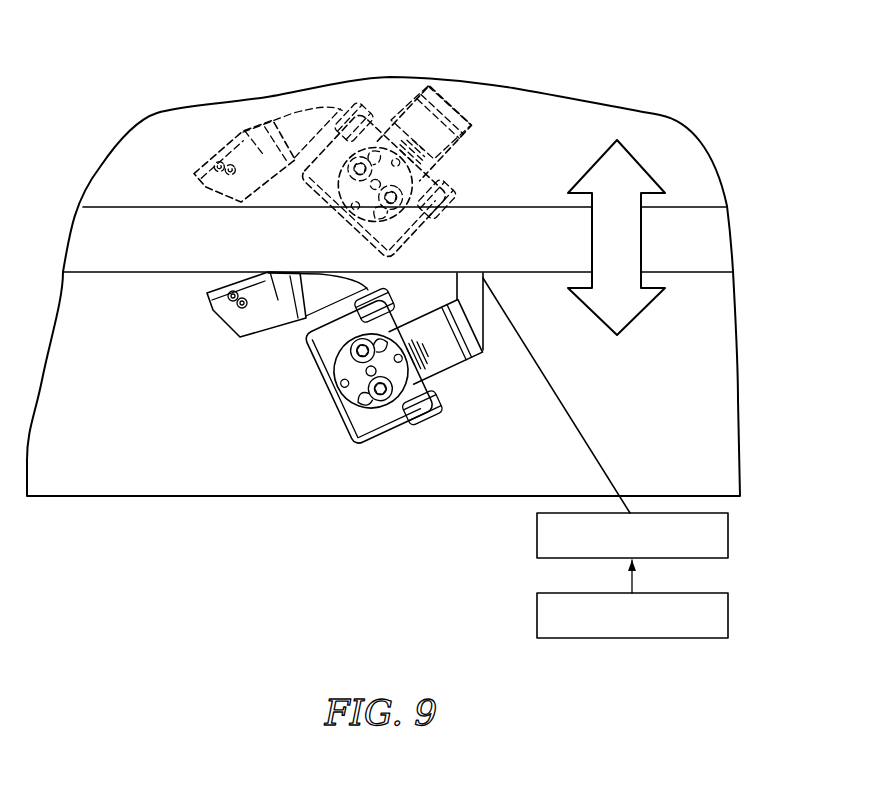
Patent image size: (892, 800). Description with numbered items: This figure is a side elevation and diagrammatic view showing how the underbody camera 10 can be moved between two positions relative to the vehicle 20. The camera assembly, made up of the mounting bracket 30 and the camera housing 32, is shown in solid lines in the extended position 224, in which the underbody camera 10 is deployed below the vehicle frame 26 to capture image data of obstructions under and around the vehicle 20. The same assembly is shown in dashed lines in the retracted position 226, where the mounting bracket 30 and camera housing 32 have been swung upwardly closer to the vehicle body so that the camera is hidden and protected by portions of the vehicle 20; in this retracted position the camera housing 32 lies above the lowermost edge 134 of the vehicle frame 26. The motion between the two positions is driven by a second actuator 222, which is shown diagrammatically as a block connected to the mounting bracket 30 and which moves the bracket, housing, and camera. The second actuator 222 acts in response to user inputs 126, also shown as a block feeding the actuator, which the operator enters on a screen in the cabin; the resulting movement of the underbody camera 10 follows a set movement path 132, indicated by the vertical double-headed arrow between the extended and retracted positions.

The underbody camera 10 is at (376, 412).
The vehicle 20 is at (618, 136).
The vehicle frame 26 is at (716, 259).
The mounting bracket 30 is at (493, 353).
The camera housing 32 is at (284, 390).
The user inputs 126 is at (728, 615).
The set movement path 132 is at (642, 242).
The lowermost edge 134 is at (127, 273).
The second actuator 222 is at (728, 535).
The extended position 224 is at (466, 387).
The retracted position 226 is at (469, 108).